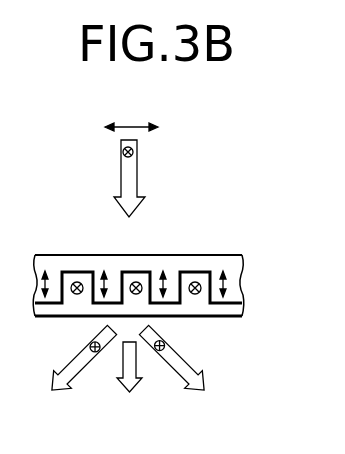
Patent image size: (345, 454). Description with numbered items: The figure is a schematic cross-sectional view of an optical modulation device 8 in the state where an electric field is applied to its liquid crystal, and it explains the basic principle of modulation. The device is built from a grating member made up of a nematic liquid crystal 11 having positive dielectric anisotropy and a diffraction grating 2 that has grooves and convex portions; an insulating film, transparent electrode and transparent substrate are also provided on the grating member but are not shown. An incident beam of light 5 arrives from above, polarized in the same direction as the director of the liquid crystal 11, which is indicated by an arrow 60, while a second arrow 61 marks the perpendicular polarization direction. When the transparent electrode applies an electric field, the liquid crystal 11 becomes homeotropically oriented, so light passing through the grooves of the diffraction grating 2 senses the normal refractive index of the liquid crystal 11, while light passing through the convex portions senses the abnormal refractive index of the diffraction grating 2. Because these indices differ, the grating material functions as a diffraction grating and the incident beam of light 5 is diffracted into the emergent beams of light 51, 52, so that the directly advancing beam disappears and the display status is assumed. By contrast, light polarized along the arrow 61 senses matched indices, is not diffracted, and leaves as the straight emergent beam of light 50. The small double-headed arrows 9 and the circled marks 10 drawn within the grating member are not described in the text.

The diffraction grating 2 is at (232, 308).
The incident beam of light 5 is at (130, 182).
The optical modulation device 8 is at (207, 254).
The stress direction 9 is at (44, 288).
The stress direction (perpendicular) 10 is at (75, 295).
The nematic liquid crystal 11 is at (228, 268).
The emergent beam of light 50 is at (127, 388).
The emergent beam of light 51 is at (77, 368).
The emergent beam of light 52 is at (176, 365).
The arrow 60 is at (134, 152).
The arrow 61 is at (132, 127).